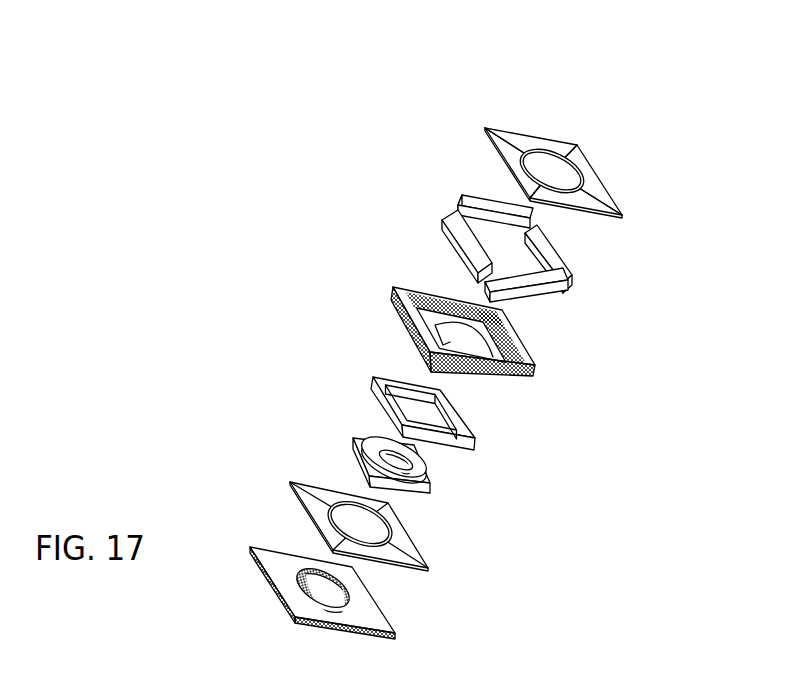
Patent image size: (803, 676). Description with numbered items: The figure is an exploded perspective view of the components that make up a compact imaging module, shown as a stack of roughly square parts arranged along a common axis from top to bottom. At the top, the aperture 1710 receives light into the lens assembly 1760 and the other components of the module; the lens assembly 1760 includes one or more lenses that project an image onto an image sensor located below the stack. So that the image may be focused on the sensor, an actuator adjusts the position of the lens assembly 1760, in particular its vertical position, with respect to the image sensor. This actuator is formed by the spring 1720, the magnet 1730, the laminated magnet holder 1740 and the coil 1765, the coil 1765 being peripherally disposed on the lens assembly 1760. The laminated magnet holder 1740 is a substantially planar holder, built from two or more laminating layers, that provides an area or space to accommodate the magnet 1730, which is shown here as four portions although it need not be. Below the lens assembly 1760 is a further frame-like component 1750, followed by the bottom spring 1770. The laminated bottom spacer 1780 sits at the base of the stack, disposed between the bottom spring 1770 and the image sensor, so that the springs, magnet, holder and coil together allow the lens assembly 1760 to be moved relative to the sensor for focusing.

The aperture 1710 is at (578, 130).
The spring 1720 is at (588, 162).
The magnet 1730 is at (577, 266).
The laminated magnet holder 1740 is at (523, 343).
The tray housing 1750 is at (473, 443).
The lens assembly 1760 is at (433, 483).
The coil 1765 is at (350, 446).
The bottom spring 1770 is at (421, 558).
The laminated bottom spacer 1780 is at (398, 629).